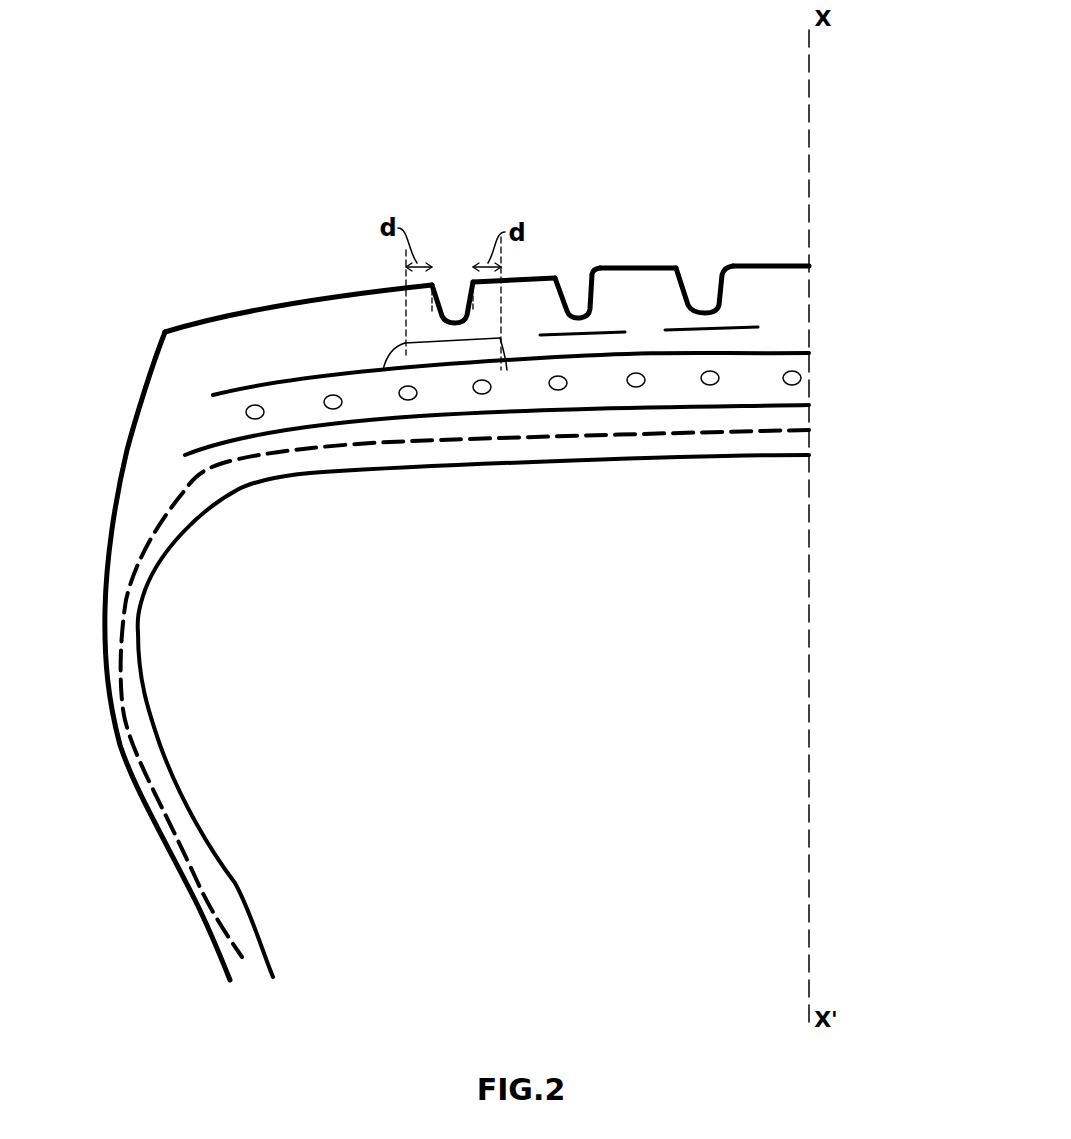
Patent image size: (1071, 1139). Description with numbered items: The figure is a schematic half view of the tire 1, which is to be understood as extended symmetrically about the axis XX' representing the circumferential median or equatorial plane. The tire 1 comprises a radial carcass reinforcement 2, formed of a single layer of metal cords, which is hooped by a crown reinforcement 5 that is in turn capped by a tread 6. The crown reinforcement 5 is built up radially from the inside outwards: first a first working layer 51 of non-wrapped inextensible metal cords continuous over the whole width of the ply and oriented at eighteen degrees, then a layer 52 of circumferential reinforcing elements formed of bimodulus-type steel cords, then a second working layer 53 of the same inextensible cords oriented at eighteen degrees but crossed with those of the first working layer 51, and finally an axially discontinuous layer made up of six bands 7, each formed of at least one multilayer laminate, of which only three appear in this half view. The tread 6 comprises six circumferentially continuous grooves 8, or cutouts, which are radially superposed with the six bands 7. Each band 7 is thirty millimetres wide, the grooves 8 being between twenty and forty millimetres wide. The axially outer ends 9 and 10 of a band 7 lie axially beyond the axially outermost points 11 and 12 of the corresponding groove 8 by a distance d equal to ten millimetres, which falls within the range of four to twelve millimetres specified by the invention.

The tire 1 is at (95, 410).
The radial carcass reinforcement 2 is at (139, 558).
The crown reinforcement 5 is at (838, 379).
The tread 6 is at (753, 263).
The bands 7 is at (607, 331).
The grooves 8 is at (573, 293).
The axially outer end of band 9 is at (383, 370).
The axially outer end of band 10 is at (507, 370).
The axially outermost point of groove 11 is at (432, 282).
The axially outermost point of groove 12 is at (470, 280).
The first working layer 51 is at (547, 413).
The layer of circumferential reinforcing elements 52 is at (638, 387).
The second working layer 53 is at (263, 382).